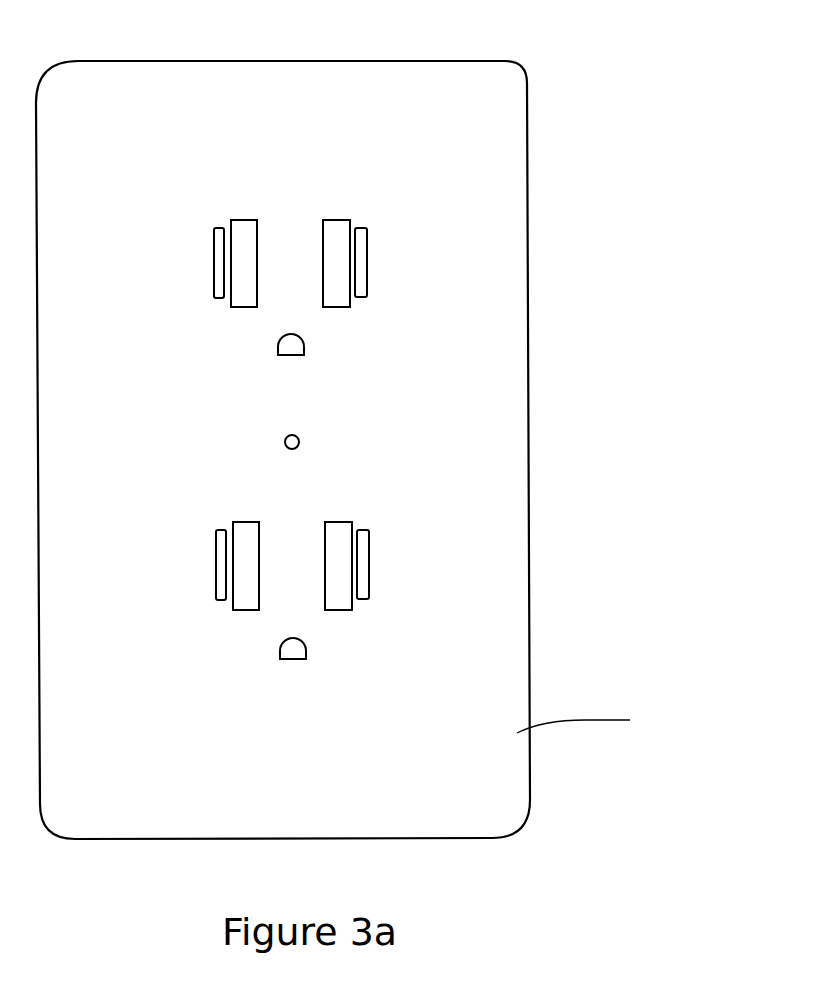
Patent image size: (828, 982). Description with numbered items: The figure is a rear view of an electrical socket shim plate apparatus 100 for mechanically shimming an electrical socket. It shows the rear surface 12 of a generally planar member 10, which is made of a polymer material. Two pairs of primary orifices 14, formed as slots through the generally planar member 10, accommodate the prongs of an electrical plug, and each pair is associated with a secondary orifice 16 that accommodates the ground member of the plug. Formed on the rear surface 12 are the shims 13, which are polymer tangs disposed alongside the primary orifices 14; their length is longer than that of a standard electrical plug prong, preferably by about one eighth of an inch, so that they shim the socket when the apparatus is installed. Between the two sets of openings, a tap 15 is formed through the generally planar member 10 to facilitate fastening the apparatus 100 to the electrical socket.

The electrical socket shim plate apparatus 100 is at (585, 119).
The generally planar member 10 is at (527, 777).
The rear surface 12 is at (593, 722).
The shims 13 is at (220, 298).
The primary orifices 14 is at (250, 220).
The tap 15 is at (299, 442).
The secondary orifice 16 is at (304, 346).